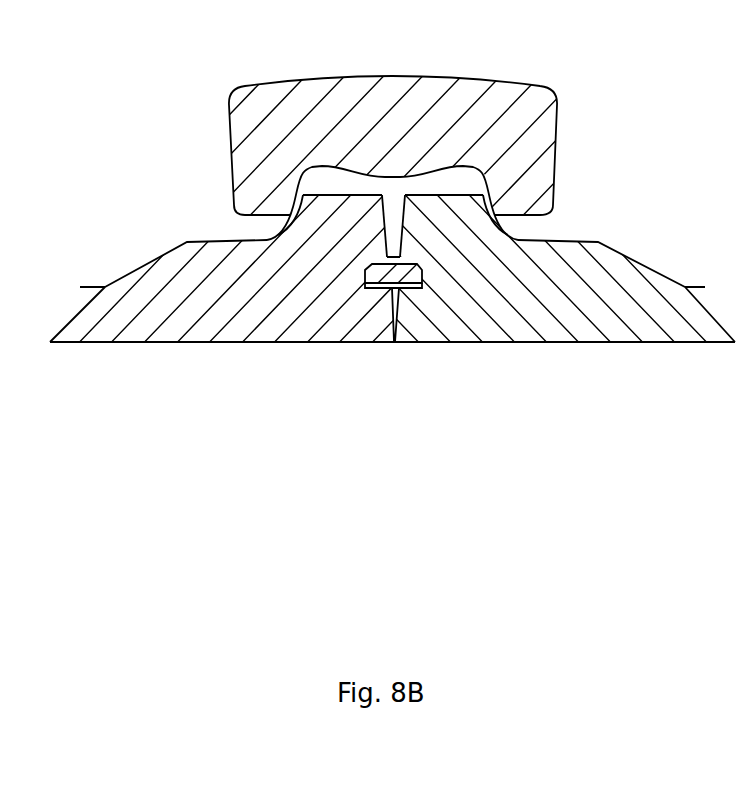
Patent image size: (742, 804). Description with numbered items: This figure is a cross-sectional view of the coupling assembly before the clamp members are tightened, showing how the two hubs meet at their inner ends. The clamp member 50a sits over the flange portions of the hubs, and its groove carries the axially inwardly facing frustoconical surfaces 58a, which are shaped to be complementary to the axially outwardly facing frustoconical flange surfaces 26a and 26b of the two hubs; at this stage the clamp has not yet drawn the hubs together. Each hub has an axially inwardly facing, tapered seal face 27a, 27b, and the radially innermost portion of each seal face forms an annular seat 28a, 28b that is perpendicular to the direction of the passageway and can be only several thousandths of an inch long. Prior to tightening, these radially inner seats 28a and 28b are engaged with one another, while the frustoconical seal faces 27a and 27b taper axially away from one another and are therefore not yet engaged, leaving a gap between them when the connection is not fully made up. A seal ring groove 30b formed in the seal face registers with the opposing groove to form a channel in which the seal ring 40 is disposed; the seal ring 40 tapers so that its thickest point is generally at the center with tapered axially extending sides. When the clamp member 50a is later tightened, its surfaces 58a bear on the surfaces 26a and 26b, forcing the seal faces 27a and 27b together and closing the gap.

The clamp member 50a is at (365, 98).
The axially inwardly facing frustoconical surfaces 58a is at (298, 192).
The axially outwardly facing frustoconical flange surface 26b is at (286, 229).
The axially outwardly facing frustoconical flange surface 26a is at (499, 219).
The seal face 27b is at (384, 216).
The seal face 27a is at (403, 228).
The seal ring groove 30b is at (367, 283).
The annular seat 28a is at (394, 342).
The annular seat 28b is at (394, 342).
The seal ring 40 is at (421, 288).